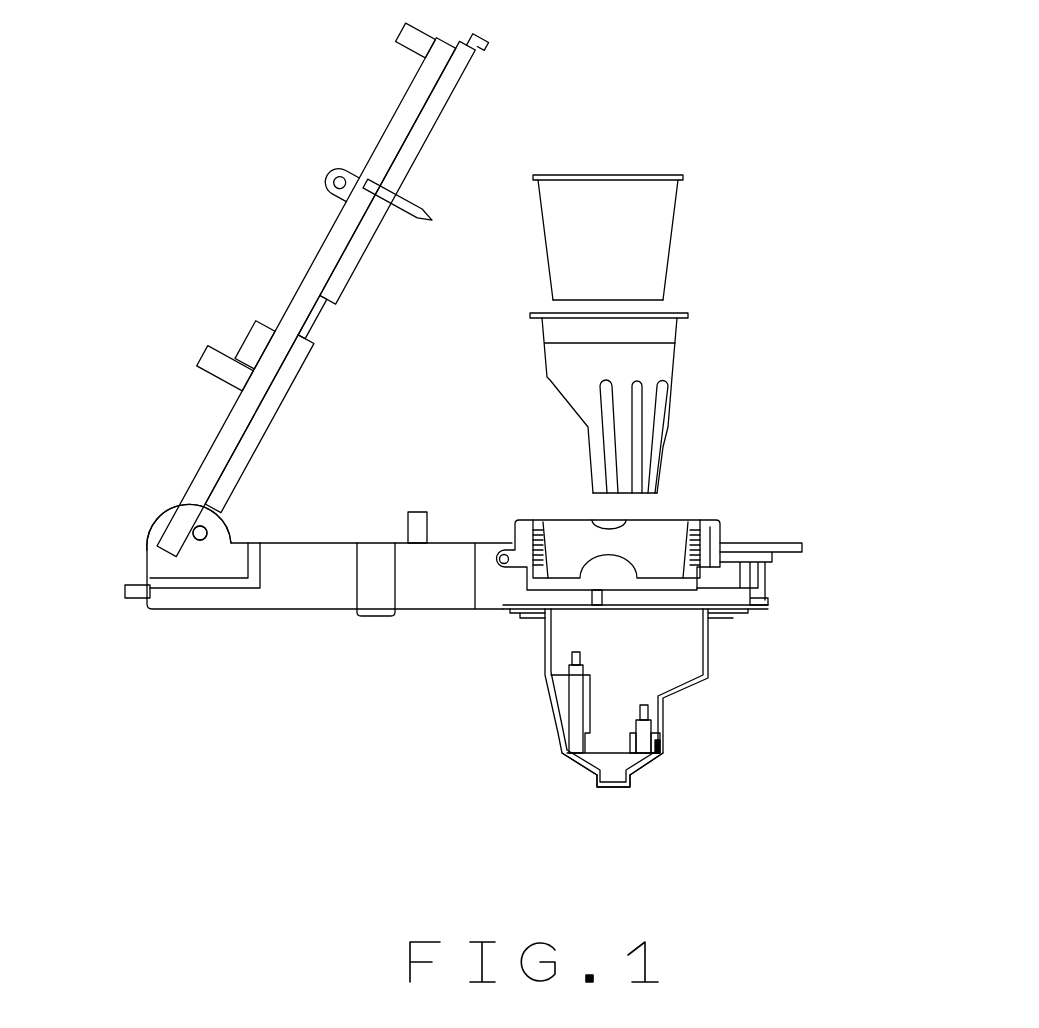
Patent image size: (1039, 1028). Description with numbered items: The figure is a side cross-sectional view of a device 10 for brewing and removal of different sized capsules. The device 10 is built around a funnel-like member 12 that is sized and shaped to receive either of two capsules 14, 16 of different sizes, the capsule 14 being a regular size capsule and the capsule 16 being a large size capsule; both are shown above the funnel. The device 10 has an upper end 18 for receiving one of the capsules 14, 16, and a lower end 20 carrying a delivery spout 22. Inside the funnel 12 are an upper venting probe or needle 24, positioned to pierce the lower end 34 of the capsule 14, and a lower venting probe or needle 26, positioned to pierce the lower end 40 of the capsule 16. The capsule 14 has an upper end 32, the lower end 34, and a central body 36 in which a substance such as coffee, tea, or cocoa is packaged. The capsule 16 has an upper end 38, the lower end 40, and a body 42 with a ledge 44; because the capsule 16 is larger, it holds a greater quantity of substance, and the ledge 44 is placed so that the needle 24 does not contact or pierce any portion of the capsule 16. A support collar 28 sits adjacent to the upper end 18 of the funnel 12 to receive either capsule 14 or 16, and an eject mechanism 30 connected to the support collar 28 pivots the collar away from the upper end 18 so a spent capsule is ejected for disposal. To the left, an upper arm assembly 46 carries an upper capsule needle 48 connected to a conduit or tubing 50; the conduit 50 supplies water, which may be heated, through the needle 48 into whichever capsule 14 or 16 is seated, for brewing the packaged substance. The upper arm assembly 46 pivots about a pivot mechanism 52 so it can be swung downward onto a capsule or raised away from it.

The device for brewing and removal of different sized capsules 10 is at (840, 352).
The funnel-like member 12 is at (515, 728).
The capsule 14 is at (708, 218).
The capsule 16 is at (712, 356).
The upper end 18 is at (722, 519).
The lower end 20 is at (665, 757).
The delivery spout 22 is at (612, 792).
The upper venting probe or needle 24 is at (568, 662).
The lower venting probe or needle 26 is at (650, 712).
The support collar 28 is at (523, 519).
The eject mechanism 30 is at (458, 628).
The upper end 32 is at (593, 176).
The lower end 34 is at (553, 300).
The central body 36 is at (543, 240).
The upper end 38 is at (690, 316).
The lower end 40 is at (660, 490).
The body 42 is at (673, 418).
The ledge 44 is at (570, 405).
The upper arm assembly 46 is at (238, 268).
The upper capsule needle 48 is at (412, 195).
The conduit or tubing 50 is at (330, 265).
The pivot mechanism 52 is at (110, 520).